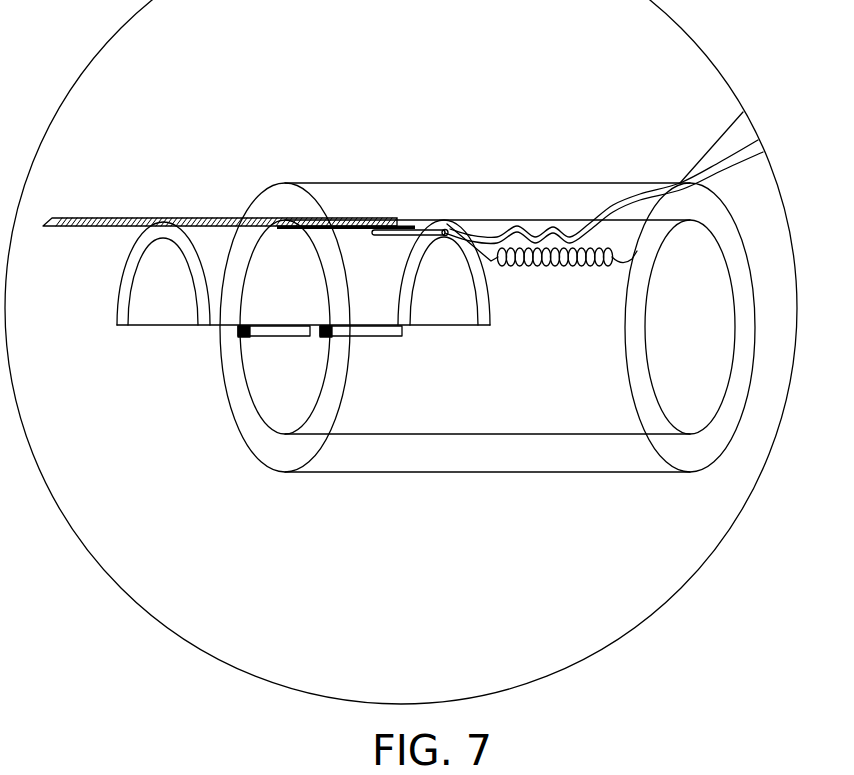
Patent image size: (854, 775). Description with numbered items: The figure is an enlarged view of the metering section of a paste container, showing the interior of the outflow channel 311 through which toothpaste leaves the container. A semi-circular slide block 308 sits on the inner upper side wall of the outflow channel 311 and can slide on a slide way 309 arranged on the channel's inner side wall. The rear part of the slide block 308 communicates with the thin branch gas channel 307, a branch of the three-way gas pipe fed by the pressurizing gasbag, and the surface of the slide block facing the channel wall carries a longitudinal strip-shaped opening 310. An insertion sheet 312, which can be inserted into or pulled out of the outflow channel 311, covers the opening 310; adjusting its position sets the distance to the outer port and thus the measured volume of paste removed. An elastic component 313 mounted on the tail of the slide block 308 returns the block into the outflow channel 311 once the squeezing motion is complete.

The thin branch gas channel 307 is at (525, 233).
The semi-circular slide block 308 is at (146, 302).
The slide way 309 is at (277, 328).
The longitudinal strip-shaped opening 310 is at (408, 226).
The outflow channel 311 is at (280, 387).
The insertion sheet 312 is at (192, 218).
The elastic component 313 is at (522, 265).